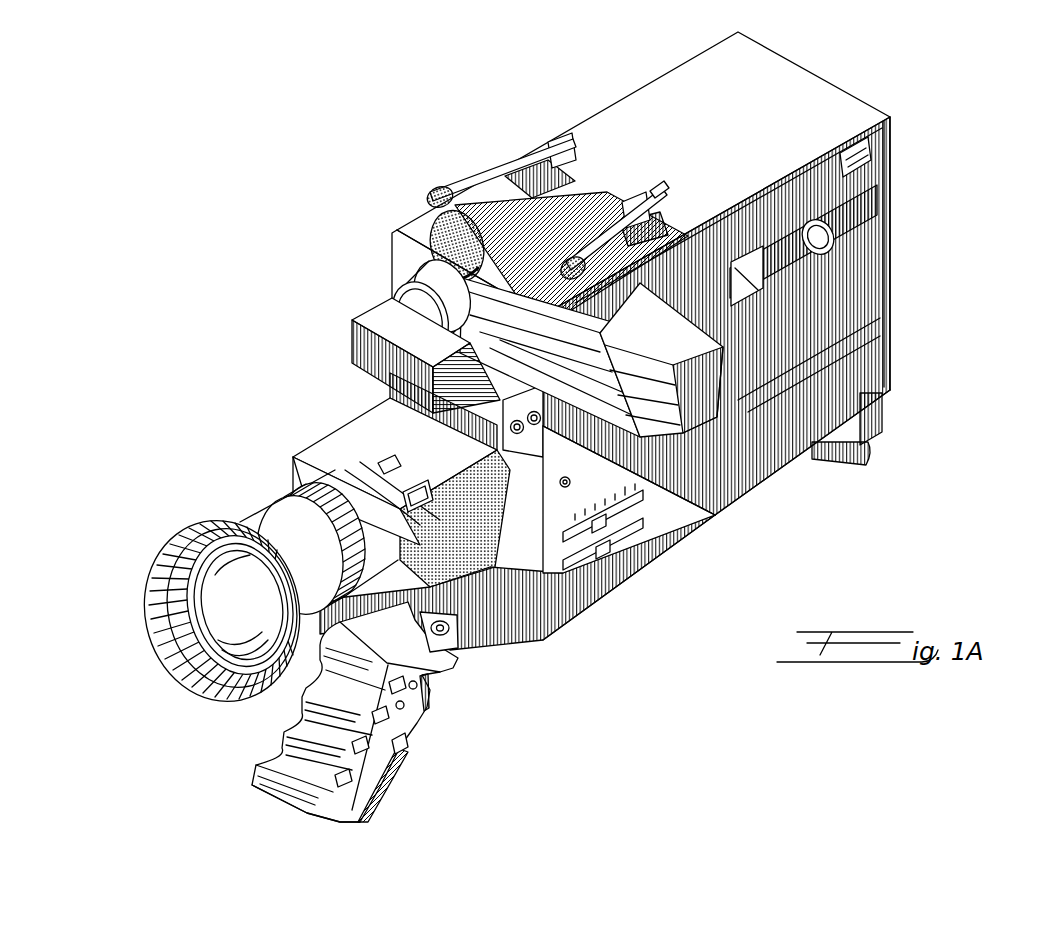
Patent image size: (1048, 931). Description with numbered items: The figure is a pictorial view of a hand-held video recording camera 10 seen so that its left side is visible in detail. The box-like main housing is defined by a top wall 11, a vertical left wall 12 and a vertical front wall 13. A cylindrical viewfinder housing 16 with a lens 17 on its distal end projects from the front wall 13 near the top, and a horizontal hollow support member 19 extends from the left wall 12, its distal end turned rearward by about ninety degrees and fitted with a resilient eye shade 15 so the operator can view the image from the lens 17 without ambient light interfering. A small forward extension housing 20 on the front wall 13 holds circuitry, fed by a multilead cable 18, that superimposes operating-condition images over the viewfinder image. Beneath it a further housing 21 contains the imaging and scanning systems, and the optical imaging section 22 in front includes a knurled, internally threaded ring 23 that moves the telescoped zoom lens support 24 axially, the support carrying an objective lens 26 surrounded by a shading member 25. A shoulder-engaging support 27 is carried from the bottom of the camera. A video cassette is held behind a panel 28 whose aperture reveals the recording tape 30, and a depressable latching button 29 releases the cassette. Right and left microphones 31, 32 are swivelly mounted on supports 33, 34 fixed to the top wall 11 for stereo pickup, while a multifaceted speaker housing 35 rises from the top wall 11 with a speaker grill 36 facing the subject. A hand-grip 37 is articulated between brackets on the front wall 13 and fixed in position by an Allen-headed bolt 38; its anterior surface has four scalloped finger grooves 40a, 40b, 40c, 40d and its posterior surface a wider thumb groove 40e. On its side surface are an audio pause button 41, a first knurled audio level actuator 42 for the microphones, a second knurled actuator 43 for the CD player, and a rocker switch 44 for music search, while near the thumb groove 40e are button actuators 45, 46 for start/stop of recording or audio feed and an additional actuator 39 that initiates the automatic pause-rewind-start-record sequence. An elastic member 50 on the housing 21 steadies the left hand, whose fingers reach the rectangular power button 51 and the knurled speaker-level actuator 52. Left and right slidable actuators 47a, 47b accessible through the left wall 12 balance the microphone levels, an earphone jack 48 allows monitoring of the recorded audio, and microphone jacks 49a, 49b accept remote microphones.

The hand-held recording video camera 10 is at (925, 306).
The top wall 11 is at (672, 82).
The left wall 12 is at (763, 483).
The front wall 13 is at (533, 640).
The resilient eye shade 15 is at (873, 410).
The viewfinder housing 16 is at (423, 300).
The viewfinder lens 17 is at (437, 330).
The multilead cable 18 is at (352, 347).
The hollow support member 19 is at (787, 473).
The forward extension housing 20 is at (370, 320).
The imaging housing 21 is at (307, 457).
The optical imaging section 22 is at (240, 492).
The knurled internally threaded ring 23 is at (255, 535).
The zoom lens support 24 is at (190, 535).
The shading member 25 is at (207, 597).
The objective lens 26 is at (200, 580).
The shoulder-engaging support 27 is at (857, 467).
The panel 28 is at (843, 300).
The latching button 29 is at (877, 160).
The video recording tape 30 is at (863, 237).
The right microphone 31 is at (430, 190).
The left microphone 32 is at (510, 167).
The microphone support 33 is at (543, 143).
The microphone support 34 is at (680, 210).
The speaker housing 35 is at (470, 183).
The speaker grill 36 is at (453, 243).
The hand-grip 37 is at (363, 823).
The Allen-headed bolt 38 is at (453, 650).
The additional actuator 39 is at (410, 747).
The scalloped groove 40a is at (277, 757).
The scalloped groove 40b is at (310, 697).
The scalloped groove 40c is at (313, 667).
The scalloped groove 40d is at (287, 633).
The thumb-receiving groove 40e is at (433, 680).
The audio pause actuator button 41 is at (353, 833).
The first knurled audio level adjusting actuator 42 is at (280, 743).
The second knurled audio level adjusting actuator 43 is at (383, 780).
The rocker switch actuator 44 is at (420, 737).
The button actuator 45 is at (410, 707).
The button actuator 46 is at (407, 687).
The left audio level adjusting slidable actuator 47a is at (647, 583).
The right audio level adjusting slidable actuator 47b is at (670, 567).
The earphone jack 48 is at (617, 603).
The microphone jack 49a is at (600, 450).
The microphone jack 49b is at (560, 633).
The elastic member 50 is at (470, 640).
The rectangular button actuator 51 is at (385, 468).
The knurled actuator 52 is at (413, 495).